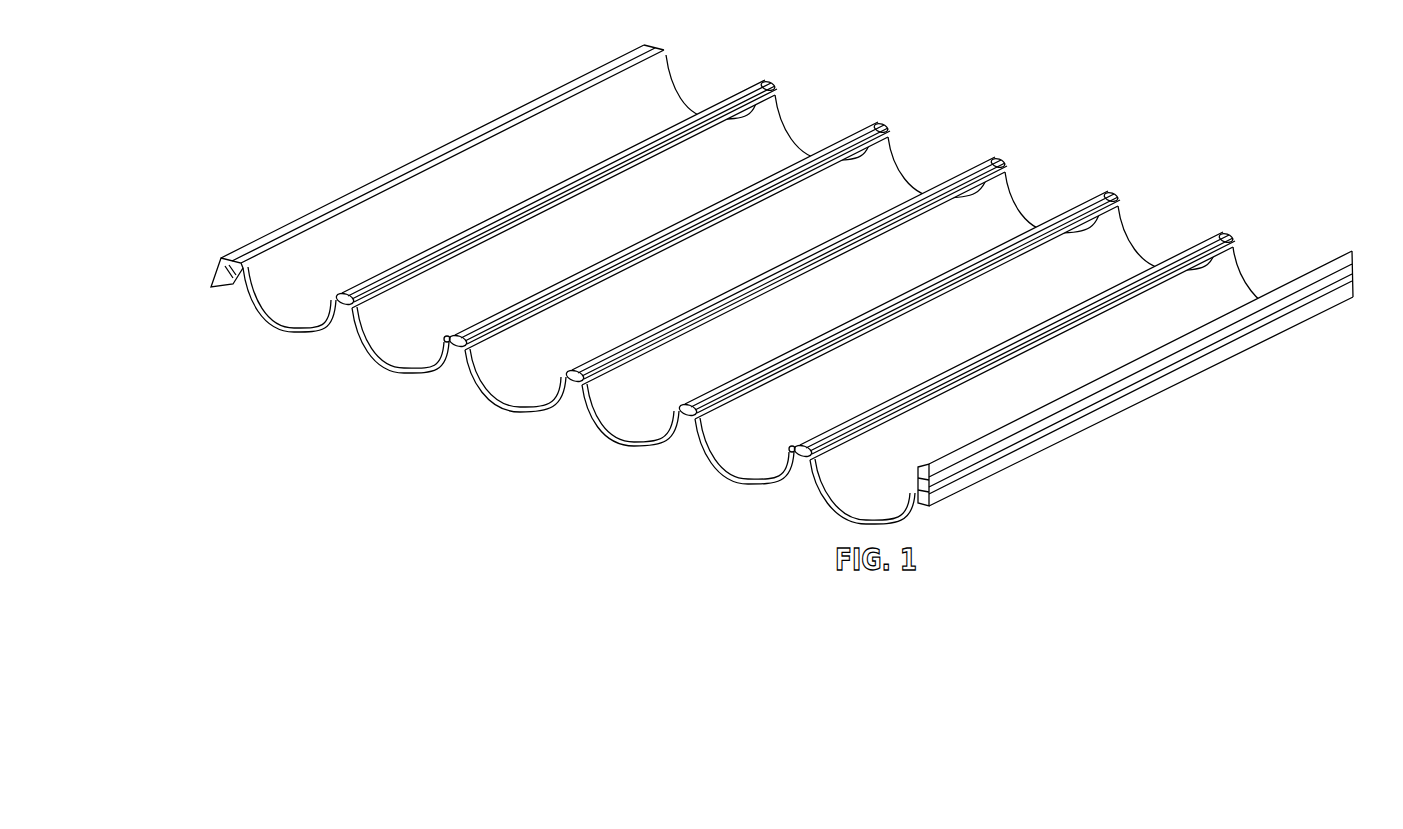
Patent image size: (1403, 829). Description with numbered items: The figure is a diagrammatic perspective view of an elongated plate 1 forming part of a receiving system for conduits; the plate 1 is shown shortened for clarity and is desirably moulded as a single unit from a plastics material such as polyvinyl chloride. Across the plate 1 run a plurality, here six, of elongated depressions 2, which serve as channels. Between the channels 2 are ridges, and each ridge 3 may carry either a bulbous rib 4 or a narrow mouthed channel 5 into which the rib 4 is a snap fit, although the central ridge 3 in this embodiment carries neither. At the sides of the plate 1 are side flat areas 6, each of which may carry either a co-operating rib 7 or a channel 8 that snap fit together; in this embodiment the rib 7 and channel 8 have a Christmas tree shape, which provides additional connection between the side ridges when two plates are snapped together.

The plate 1 is at (758, 298).
The elongated depressions 2 is at (282, 315).
The ridge 3 is at (342, 305).
The bulbous rib 4 is at (363, 280).
The narrow mouthed channel 5 is at (446, 345).
The side flat areas 6 is at (229, 257).
The co-operating rib 7 is at (935, 488).
The channel 8 is at (212, 287).